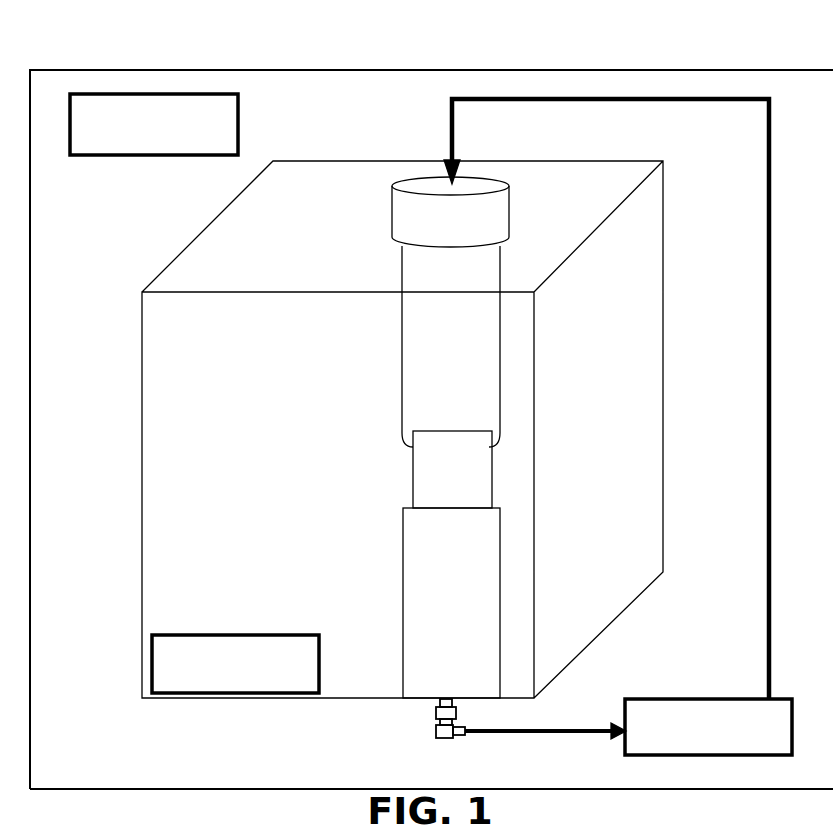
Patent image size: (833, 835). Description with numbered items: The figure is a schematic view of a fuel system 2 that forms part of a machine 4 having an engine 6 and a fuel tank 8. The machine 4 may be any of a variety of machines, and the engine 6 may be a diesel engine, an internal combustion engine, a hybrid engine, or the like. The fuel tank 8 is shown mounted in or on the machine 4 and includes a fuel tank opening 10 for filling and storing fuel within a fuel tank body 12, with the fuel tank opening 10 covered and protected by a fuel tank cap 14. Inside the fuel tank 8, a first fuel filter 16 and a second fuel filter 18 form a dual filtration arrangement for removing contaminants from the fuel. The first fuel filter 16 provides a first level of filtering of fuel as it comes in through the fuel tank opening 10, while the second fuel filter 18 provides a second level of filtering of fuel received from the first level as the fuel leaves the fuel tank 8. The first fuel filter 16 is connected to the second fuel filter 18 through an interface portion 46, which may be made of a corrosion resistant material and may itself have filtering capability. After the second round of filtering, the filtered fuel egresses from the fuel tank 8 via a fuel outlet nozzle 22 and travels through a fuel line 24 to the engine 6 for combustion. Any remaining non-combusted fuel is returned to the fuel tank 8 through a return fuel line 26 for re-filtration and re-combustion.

The fuel system 2 is at (735, 69).
The machine 4 is at (320, 99).
The engine 6 is at (672, 698).
The fuel tank 8 is at (665, 378).
The fuel tank opening 10 is at (473, 480).
The fuel tank body 12 is at (617, 480).
The fuel tank cap 14 is at (497, 207).
The first fuel filter 16 is at (402, 342).
The second fuel filter 18 is at (417, 558).
The fuel outlet nozzle 22 is at (437, 715).
The fuel line 24 is at (520, 733).
The return fuel line 26 is at (458, 128).
The interface portion 46 is at (422, 462).